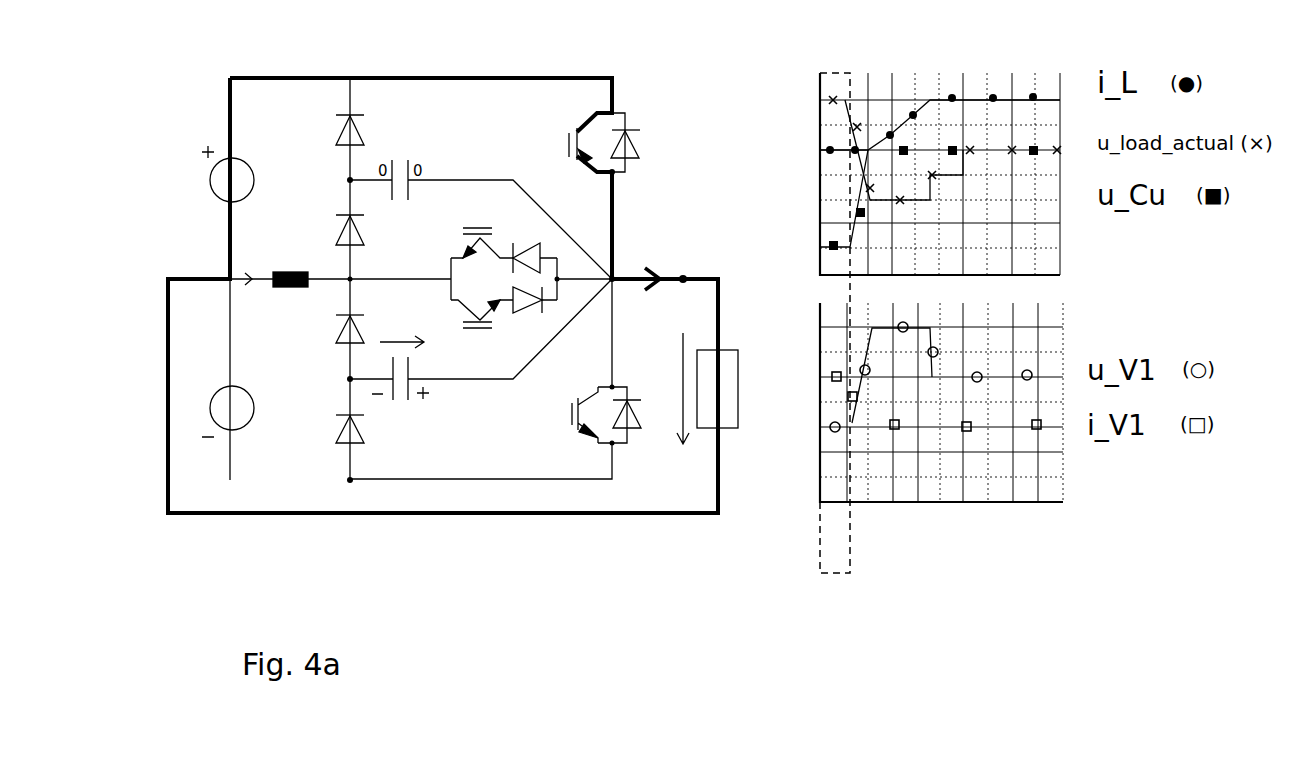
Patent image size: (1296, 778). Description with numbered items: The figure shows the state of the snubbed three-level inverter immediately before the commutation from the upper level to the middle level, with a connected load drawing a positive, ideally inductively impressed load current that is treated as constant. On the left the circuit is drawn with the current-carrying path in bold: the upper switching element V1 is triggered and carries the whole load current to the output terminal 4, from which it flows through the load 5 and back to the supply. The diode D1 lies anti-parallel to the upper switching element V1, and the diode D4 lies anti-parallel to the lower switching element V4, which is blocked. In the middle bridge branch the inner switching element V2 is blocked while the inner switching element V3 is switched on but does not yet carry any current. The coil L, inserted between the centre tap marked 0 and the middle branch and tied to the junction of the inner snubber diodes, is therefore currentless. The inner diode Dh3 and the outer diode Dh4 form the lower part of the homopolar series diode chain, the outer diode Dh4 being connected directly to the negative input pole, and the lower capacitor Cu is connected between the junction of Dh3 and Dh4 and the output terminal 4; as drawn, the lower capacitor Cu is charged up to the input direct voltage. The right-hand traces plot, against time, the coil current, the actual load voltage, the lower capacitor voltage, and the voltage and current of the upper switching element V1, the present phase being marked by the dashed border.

The neutral/zero node 0 is at (218, 379).
The output terminal 4 is at (665, 268).
The load 5 is at (709, 385).
The coil L is at (290, 269).
The upper switching element V1 is at (568, 145).
The diode D1 is at (633, 142).
The inner switching element V2 is at (504, 241).
The inner switching element V3 is at (504, 323).
The lower switching element V4 is at (570, 415).
The diode D4 is at (633, 415).
The inner diode Dh3 is at (332, 329).
The outer diode Dh4 is at (332, 429).
The lower capacitor Cu is at (481, 354).